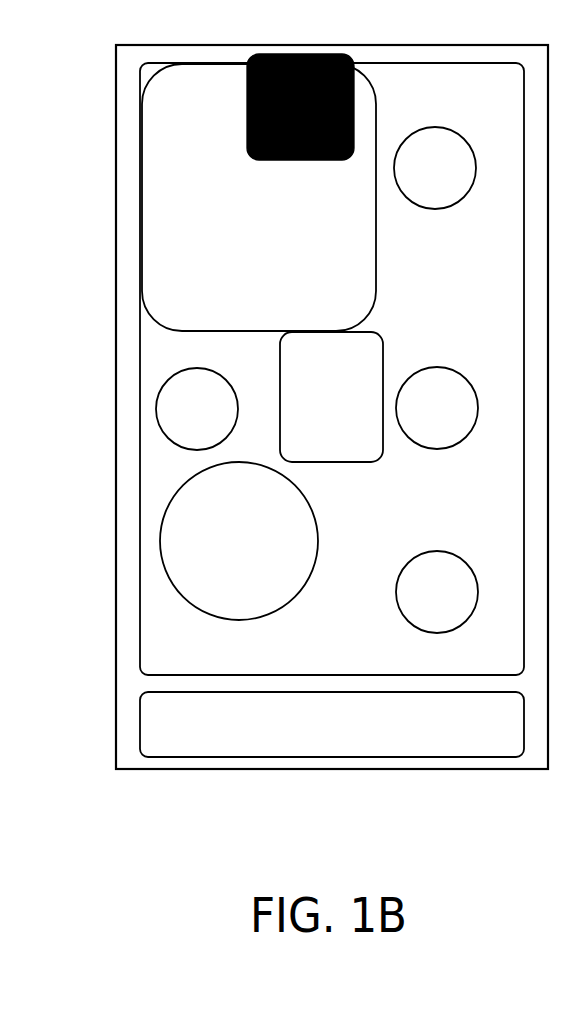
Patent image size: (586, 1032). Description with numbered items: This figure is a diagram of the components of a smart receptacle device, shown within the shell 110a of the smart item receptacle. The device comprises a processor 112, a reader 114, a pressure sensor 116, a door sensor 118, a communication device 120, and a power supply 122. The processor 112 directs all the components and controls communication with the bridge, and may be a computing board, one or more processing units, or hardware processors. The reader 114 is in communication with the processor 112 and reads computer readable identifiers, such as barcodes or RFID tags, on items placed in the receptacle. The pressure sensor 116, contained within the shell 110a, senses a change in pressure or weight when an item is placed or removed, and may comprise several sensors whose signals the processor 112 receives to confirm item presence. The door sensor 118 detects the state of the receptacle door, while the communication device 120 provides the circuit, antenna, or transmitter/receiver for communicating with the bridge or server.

The shell 110a is at (116, 73).
The processor 112 is at (187, 201).
The reader 114 is at (312, 391).
The pressure sensor 116 is at (415, 183).
The door sensor 118 is at (312, 741).
The communication device 120 is at (458, 78).
The power supply 122 is at (219, 557).